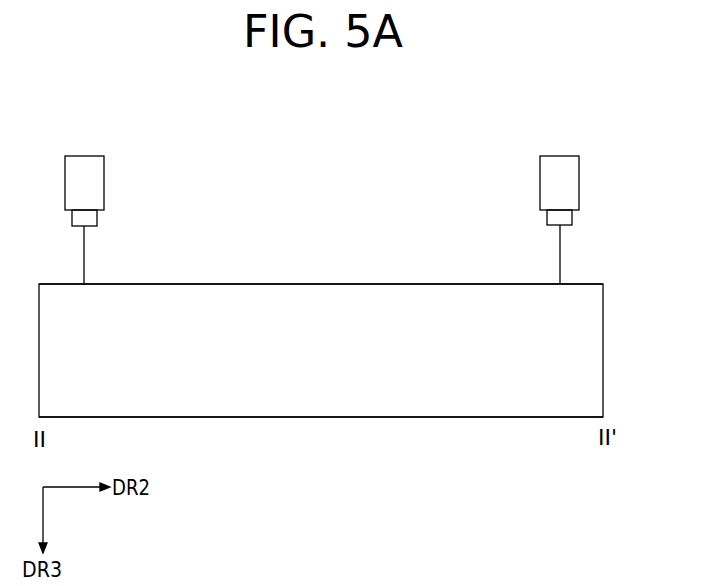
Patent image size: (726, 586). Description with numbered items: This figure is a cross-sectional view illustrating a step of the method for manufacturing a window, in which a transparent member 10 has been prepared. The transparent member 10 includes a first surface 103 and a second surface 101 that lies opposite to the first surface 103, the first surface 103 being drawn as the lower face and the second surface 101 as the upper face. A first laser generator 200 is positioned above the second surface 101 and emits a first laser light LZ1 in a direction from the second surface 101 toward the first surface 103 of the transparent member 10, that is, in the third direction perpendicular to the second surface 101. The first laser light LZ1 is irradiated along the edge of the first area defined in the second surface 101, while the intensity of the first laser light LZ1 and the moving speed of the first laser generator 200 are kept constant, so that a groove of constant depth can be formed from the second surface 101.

The transparent member 10 is at (590, 350).
The second surface 101 is at (590, 283).
The first surface 103 is at (500, 417).
The first laser generator 200 is at (568, 182).
The first laser light LZ1 is at (558, 243).